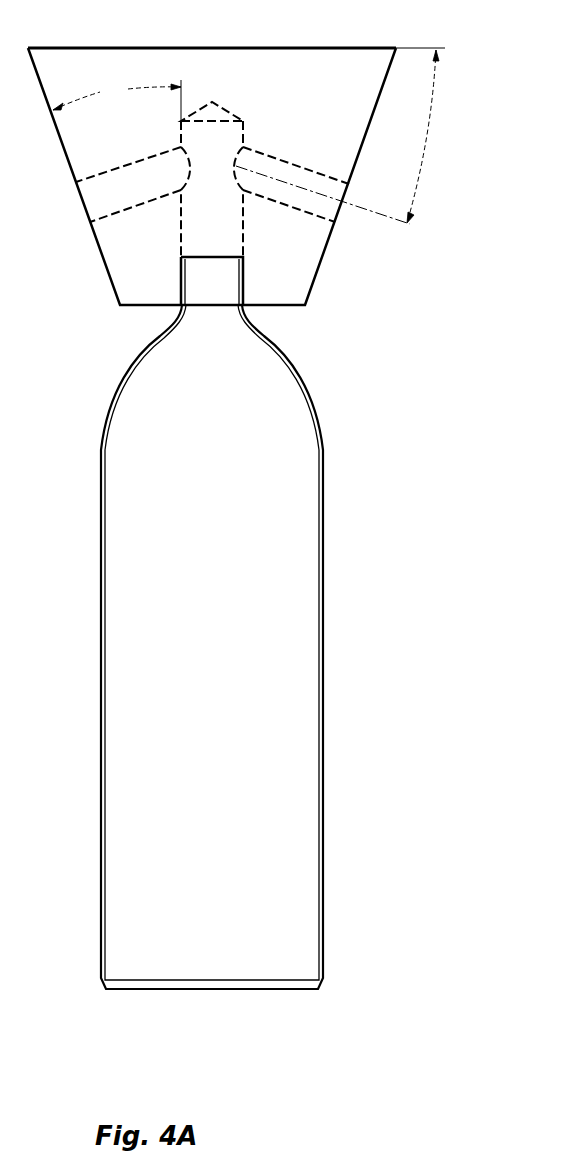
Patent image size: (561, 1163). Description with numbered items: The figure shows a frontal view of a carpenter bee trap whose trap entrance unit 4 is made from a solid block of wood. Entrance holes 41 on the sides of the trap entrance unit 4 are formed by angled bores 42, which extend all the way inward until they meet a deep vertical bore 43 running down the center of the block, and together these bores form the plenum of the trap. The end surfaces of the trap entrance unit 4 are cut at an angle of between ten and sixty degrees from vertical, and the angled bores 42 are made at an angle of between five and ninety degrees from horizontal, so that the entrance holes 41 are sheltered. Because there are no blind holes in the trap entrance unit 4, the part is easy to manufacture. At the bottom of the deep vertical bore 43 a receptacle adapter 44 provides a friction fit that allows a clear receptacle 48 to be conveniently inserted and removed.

The trap entrance unit 4 is at (267, 47).
The entrance holes 41 is at (343, 200).
The angled bores 42 is at (303, 200).
The deep vertical bore 43 is at (227, 143).
The receptacle adapter 44 is at (248, 307).
The clear receptacle 48 is at (325, 457).